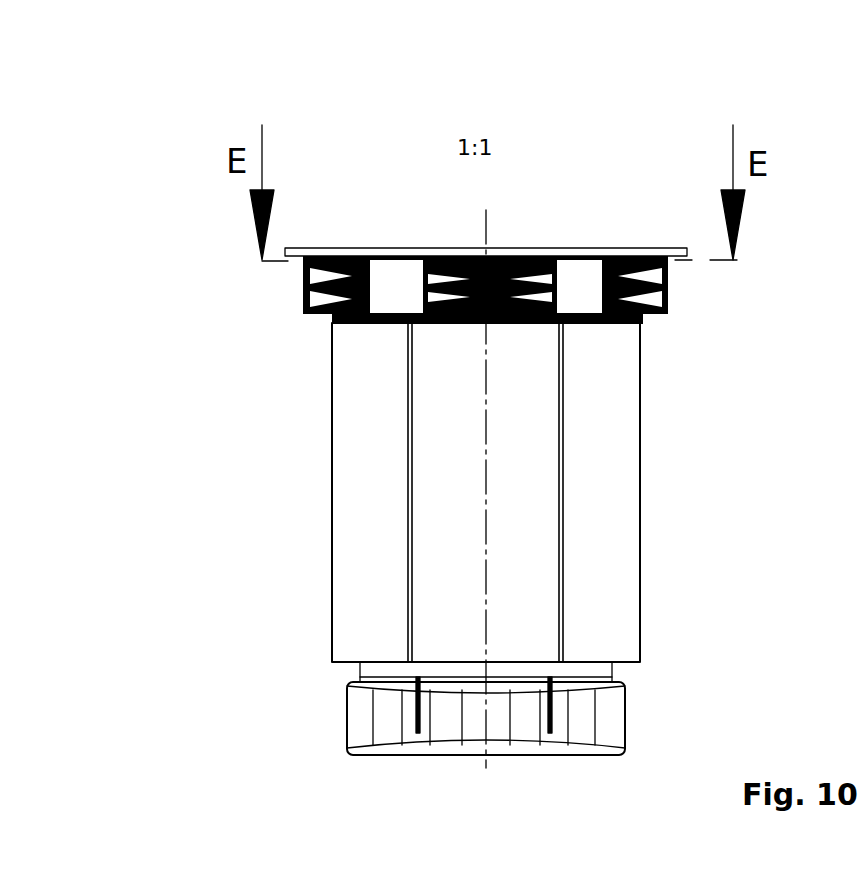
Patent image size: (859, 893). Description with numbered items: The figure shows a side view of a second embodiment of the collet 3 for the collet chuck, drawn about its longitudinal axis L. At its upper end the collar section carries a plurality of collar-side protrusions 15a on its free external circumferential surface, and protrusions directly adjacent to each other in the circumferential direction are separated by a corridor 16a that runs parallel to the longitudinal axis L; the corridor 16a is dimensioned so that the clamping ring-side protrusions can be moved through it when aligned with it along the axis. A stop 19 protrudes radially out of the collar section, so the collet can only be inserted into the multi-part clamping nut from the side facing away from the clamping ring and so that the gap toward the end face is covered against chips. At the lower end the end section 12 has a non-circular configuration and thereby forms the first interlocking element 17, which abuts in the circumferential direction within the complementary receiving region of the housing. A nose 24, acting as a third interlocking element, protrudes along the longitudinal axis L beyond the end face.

The collet 3 is at (360, 439).
The end section 12 is at (343, 716).
The collar-side protrusions 15a is at (308, 312).
The corridor 16a is at (398, 270).
The first interlocking element 17 is at (363, 733).
The stop 19 is at (655, 254).
The nose 24 is at (408, 558).
The longitudinal axis L is at (486, 605).